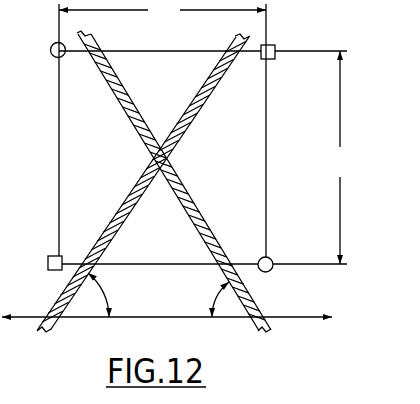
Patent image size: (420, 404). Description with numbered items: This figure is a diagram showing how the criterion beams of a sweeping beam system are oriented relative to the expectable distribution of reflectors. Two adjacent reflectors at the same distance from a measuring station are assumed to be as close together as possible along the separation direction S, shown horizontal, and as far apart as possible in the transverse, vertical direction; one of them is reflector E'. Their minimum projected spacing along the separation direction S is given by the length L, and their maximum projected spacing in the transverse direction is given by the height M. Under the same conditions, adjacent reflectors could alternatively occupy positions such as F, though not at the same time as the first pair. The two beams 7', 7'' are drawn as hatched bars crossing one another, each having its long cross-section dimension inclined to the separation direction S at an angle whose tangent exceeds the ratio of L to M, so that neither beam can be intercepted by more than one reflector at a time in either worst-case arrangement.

The criterion beam 7' is at (169, 181).
The criterion beam 7'' is at (143, 183).
The reflector position F is at (275, 46).
The reflector E' is at (285, 276).
The minimum projected distance in the separation direction L is at (162, 14).
The maximum projected distance in the transverse direction M is at (340, 157).
The separation direction S is at (167, 317).